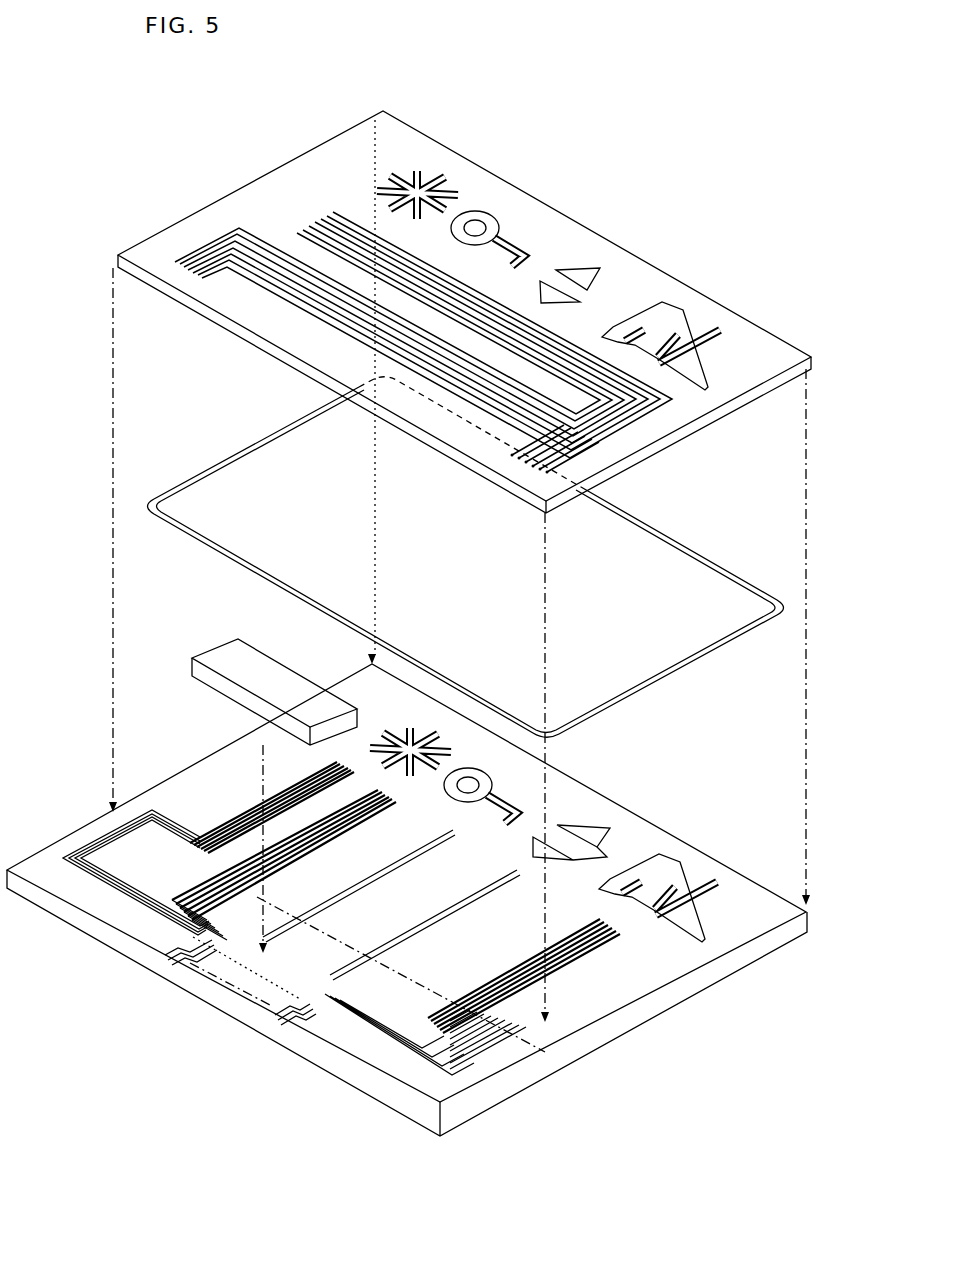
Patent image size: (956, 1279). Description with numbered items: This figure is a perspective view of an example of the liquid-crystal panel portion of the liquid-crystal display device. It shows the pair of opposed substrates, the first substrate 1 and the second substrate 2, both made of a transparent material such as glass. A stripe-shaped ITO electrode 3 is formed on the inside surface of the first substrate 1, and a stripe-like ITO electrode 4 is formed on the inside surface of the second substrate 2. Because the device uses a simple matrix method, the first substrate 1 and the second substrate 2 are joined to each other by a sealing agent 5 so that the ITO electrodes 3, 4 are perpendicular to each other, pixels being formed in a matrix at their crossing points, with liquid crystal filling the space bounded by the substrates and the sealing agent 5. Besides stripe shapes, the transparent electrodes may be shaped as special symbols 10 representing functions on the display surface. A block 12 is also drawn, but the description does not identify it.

The first substrate 1 is at (745, 880).
The second substrate 2 is at (765, 336).
The ITO electrode 3 is at (232, 820).
The ITO electrode 4 is at (287, 232).
The sealing agent 5 is at (716, 560).
The special symbol 10 is at (494, 220).
The driver component 12 is at (276, 658).